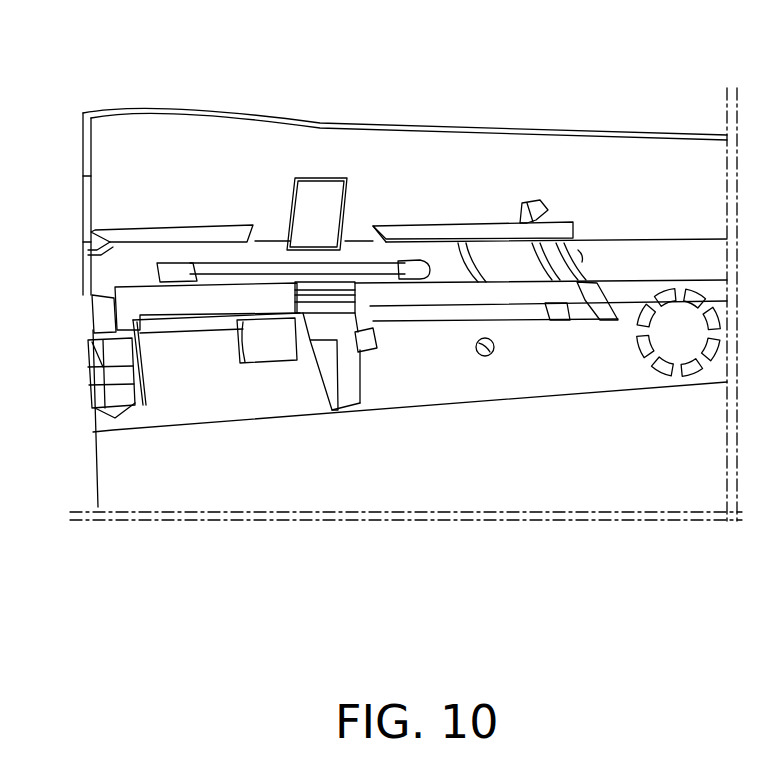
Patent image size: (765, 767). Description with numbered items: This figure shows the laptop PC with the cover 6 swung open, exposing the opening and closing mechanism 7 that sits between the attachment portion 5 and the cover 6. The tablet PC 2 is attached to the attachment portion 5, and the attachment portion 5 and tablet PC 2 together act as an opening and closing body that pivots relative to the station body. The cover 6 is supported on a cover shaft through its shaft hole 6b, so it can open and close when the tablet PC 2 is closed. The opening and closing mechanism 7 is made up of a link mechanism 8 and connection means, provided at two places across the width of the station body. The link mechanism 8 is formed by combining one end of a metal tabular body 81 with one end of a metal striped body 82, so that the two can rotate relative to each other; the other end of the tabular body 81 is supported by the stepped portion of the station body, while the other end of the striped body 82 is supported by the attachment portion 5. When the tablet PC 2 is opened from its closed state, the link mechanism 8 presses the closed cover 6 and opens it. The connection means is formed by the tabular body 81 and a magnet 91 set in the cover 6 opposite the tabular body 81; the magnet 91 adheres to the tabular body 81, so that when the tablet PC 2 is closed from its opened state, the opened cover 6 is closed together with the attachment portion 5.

The tablet PC 2 is at (120, 452).
The attachment portion 5 is at (155, 383).
The cover 6 is at (110, 191).
The shaft hole 6b is at (495, 260).
The opening and closing mechanism 7 is at (395, 160).
The link mechanism 8 is at (315, 445).
The tabular body 81 is at (320, 325).
The striped body 82 is at (338, 342).
The magnet 91 is at (317, 202).